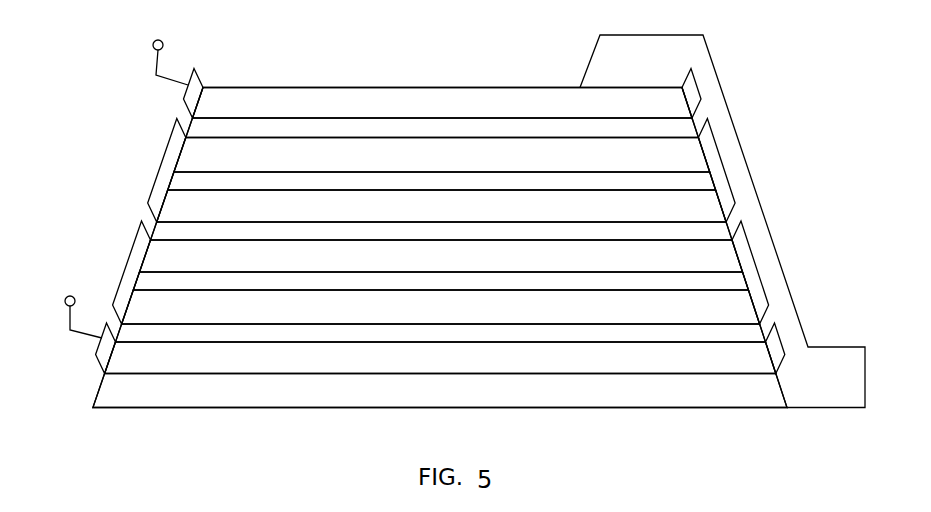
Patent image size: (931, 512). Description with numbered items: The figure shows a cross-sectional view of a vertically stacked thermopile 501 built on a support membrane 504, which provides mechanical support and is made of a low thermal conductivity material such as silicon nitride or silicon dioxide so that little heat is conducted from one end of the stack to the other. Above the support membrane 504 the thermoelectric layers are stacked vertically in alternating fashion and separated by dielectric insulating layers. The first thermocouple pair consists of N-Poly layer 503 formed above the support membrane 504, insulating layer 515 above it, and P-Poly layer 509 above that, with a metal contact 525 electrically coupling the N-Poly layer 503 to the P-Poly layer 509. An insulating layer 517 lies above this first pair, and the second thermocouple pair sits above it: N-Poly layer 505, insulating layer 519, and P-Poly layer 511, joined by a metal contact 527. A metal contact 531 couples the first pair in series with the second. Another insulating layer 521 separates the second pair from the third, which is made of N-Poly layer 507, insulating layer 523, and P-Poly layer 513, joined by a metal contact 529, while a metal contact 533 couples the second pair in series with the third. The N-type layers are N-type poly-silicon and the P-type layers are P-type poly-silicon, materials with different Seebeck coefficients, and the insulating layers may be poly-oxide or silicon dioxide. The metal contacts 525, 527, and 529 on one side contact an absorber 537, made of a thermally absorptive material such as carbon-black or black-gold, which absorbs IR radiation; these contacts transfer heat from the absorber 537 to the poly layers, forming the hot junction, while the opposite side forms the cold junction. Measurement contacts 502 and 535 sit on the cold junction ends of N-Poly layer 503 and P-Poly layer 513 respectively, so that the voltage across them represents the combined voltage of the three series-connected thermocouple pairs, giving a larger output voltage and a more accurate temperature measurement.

The stacked thermopile 501 is at (93, 112).
The measurement contact 502 is at (97, 358).
The N-Poly layer 503 is at (440, 359).
The support membrane 504 is at (438, 403).
The N-Poly layer 505 is at (441, 256).
The N-Poly layer 507 is at (442, 155).
The P-Poly layer 509 is at (441, 308).
The P-Poly layer 511 is at (441, 207).
The P-Poly layer 513 is at (443, 107).
The insulating layer 515 is at (407, 337).
The insulating layer 517 is at (407, 285).
The insulating layer 519 is at (407, 235).
The insulating layer 521 is at (407, 182).
The insulating layer 523 is at (407, 131).
The metal contact 525 is at (858, 237).
The metal contact 527 is at (717, 167).
The metal contact 529 is at (692, 92).
The metal contact 531 is at (128, 262).
The metal contact 533 is at (167, 162).
The measurement contact 535 is at (200, 78).
The absorber 537 is at (600, 53).